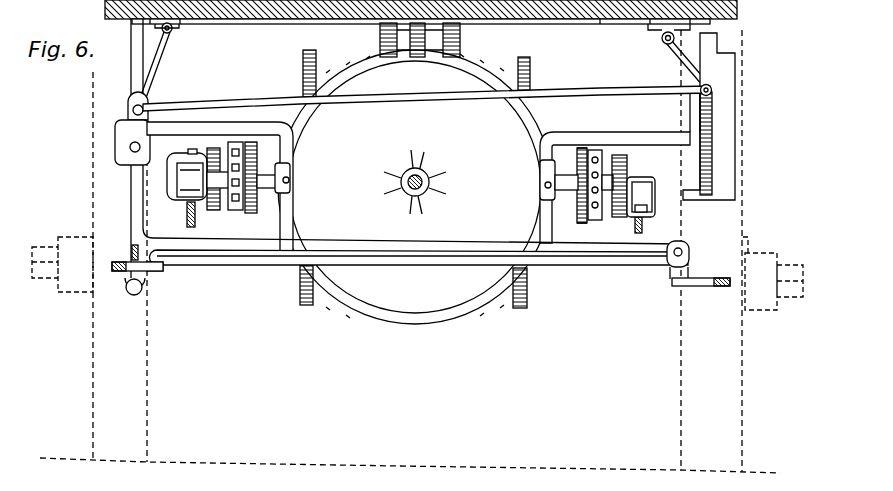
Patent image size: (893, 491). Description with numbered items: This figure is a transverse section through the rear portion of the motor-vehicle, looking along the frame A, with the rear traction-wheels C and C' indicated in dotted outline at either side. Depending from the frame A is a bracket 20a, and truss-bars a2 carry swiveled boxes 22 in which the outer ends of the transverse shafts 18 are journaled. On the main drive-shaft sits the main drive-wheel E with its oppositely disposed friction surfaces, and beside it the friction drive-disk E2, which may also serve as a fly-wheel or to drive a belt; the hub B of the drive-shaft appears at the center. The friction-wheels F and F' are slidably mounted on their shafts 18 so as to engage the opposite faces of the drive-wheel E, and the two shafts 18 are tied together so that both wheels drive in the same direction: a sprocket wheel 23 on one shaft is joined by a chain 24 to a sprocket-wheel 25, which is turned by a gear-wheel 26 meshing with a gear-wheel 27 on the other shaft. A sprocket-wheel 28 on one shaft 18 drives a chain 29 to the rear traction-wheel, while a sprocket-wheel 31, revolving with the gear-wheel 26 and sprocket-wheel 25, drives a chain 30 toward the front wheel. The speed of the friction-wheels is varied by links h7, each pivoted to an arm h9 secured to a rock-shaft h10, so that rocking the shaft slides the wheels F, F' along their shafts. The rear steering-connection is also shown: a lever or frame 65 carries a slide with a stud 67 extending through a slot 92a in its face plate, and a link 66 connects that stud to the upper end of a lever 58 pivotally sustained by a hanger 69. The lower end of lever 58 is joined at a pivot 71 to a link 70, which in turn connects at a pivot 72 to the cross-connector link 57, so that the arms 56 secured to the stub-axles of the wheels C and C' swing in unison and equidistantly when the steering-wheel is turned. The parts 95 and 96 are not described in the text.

The frame A is at (605, 27).
The rock-shaft h10 is at (753, 47).
The arm h9 is at (175, 47).
The link h7 is at (183, 119).
The hanger 69 is at (133, 95).
The lever 58 is at (127, 128).
The swiveled box 22 is at (173, 180).
The truss-bar a2 is at (763, 225).
The gear-wheel 27 is at (219, 148).
The chain 29 is at (232, 212).
The sprocket-wheel 28 is at (242, 212).
The shaft 18 is at (257, 215).
The sprocket wheel 23 is at (268, 225).
The chain 24 is at (257, 148).
The sprocket-wheel 25 is at (582, 148).
The gear-wheel 26 is at (620, 218).
The chain 30 is at (583, 225).
The sprocket-wheel 31 is at (600, 222).
The link 66 is at (497, 97).
The stud 67 is at (713, 90).
The lever 65 is at (723, 113).
The slot 92a is at (707, 147).
The link 70 is at (355, 238).
The link 57 is at (362, 262).
The pivot connection 72 is at (688, 250).
The arm 56 is at (122, 268).
The pivot connection 71 is at (138, 290).
The front wheel B is at (428, 178).
The main drive-wheel E is at (473, 312).
The friction drive-disk E2 is at (415, 186).
The friction-wheel F is at (303, 206).
The friction-wheel F' is at (522, 210).
The top block 95 is at (418, 52).
The top block 96 is at (362, 40).
The bracket 20a is at (484, 40).
The rear wheel C is at (216, 269).
The rear wheel C' is at (601, 251).